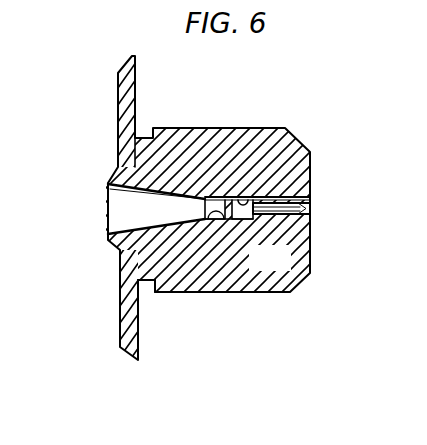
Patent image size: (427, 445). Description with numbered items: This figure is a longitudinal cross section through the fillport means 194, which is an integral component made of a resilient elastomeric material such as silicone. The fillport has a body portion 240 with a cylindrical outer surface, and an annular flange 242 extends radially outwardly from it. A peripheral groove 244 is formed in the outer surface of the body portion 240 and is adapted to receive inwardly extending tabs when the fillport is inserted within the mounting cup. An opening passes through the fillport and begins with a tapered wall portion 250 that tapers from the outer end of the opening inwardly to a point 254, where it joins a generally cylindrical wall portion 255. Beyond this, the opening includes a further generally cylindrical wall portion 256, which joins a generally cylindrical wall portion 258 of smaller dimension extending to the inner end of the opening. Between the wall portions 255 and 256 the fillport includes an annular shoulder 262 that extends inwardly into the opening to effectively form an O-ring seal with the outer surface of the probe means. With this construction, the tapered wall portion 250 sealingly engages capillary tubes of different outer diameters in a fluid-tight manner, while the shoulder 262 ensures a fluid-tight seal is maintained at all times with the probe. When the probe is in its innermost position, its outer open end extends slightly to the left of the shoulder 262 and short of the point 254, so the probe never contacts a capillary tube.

The fillport means 194 is at (270, 89).
The body portion 240 is at (283, 293).
The annular flange 242 is at (118, 331).
The peripheral groove 244 is at (141, 285).
The tapered wall portion 250 is at (205, 200).
The point 254 is at (212, 216).
The generally cylindrical wall portion 255 is at (223, 220).
The generally cylindrical wall portion 256 is at (243, 197).
The generally cylindrical wall portion of smaller dimension 258 is at (312, 205).
The annular shoulder 262 is at (272, 261).